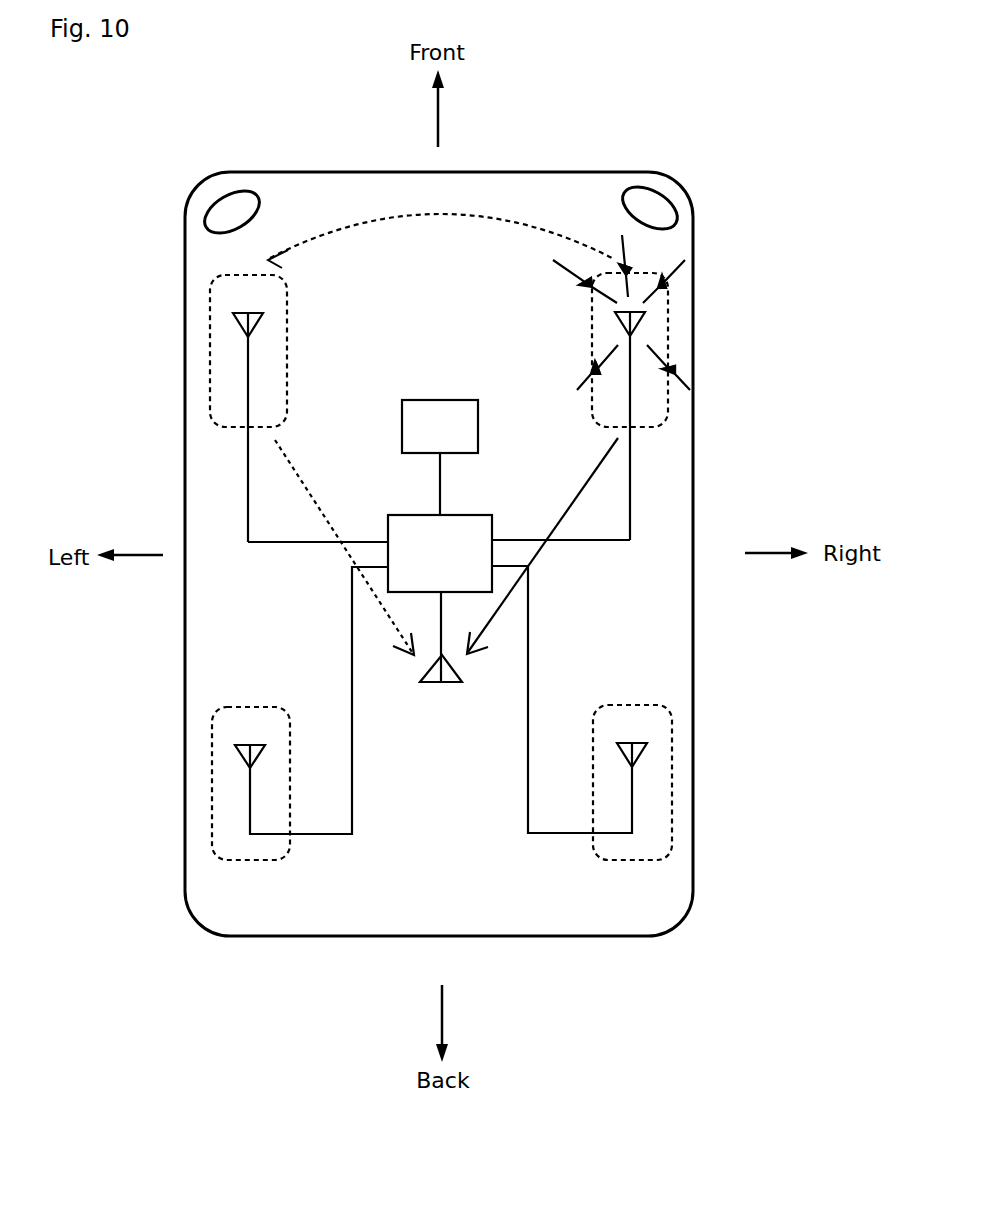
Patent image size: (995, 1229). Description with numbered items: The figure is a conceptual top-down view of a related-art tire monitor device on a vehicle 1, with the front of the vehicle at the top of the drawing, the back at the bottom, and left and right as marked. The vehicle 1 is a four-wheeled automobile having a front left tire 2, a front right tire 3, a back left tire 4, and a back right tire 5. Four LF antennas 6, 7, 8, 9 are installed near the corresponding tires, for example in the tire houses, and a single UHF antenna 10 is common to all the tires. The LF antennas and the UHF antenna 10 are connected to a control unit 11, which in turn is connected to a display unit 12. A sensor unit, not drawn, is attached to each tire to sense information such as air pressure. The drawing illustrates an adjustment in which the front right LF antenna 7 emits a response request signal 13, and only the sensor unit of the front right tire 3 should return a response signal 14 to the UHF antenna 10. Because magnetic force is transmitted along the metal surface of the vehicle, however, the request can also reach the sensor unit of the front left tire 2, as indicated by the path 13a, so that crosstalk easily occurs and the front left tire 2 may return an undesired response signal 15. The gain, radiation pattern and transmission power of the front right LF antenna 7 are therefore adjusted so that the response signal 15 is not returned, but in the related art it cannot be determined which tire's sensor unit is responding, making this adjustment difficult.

The vehicle 1 is at (563, 173).
The front left tire 2 is at (240, 275).
The front right tire 3 is at (592, 330).
The back left tire 4 is at (247, 707).
The back right tire 5 is at (628, 707).
The LF antenna 6 is at (258, 318).
The front right LF antenna 7 is at (640, 320).
The LF antenna 8 is at (247, 757).
The LF antenna 9 is at (640, 757).
The UHF antenna 10 is at (440, 683).
The control unit 11 is at (418, 515).
The display unit 12 is at (415, 400).
The response request signal 13 is at (626, 262).
The undesired transmission of response request signal 13a is at (413, 217).
The response signal 14 is at (592, 468).
The response signal 15 is at (248, 468).